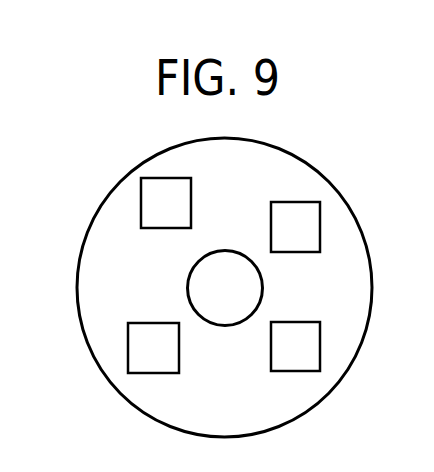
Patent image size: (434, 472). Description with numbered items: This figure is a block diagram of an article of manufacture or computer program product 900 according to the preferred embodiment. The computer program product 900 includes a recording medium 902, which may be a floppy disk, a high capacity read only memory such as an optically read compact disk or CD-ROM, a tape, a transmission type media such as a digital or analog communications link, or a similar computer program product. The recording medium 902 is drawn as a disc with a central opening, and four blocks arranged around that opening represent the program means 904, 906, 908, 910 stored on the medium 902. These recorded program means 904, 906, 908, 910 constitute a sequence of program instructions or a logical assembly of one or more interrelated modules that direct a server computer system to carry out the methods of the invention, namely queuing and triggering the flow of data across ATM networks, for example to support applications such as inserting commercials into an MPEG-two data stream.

The computer program product 900 is at (310, 137).
The recording medium 902 is at (85, 240).
The program means 904 is at (295, 227).
The program means 906 is at (153, 348).
The program means 908 is at (166, 203).
The program means 910 is at (295, 346).